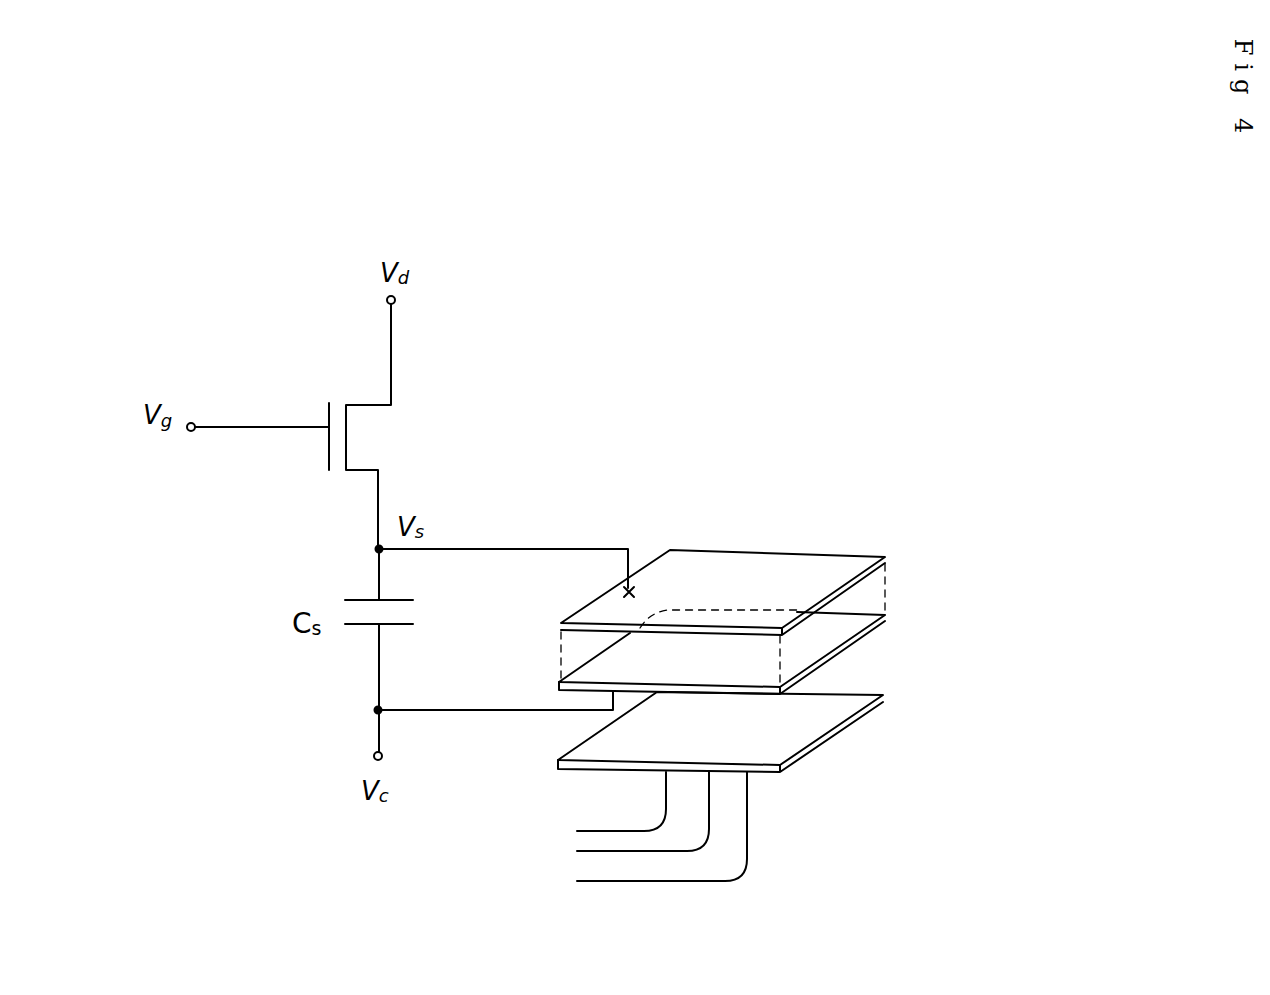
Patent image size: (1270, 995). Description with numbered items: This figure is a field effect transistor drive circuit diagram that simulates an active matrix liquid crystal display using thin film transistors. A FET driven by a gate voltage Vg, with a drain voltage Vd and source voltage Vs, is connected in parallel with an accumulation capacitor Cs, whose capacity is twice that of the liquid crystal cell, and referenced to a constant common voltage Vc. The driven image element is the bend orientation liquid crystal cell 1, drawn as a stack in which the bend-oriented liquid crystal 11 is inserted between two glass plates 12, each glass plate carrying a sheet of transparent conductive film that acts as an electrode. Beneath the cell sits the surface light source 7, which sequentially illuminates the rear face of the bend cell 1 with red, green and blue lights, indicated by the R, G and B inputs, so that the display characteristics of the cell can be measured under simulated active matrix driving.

The bend orientation liquid crystal cell 1 is at (900, 545).
The glass plates 12 is at (832, 563).
The bend-oriented liquid crystal 11 is at (828, 633).
The surface light source 7 is at (843, 730).